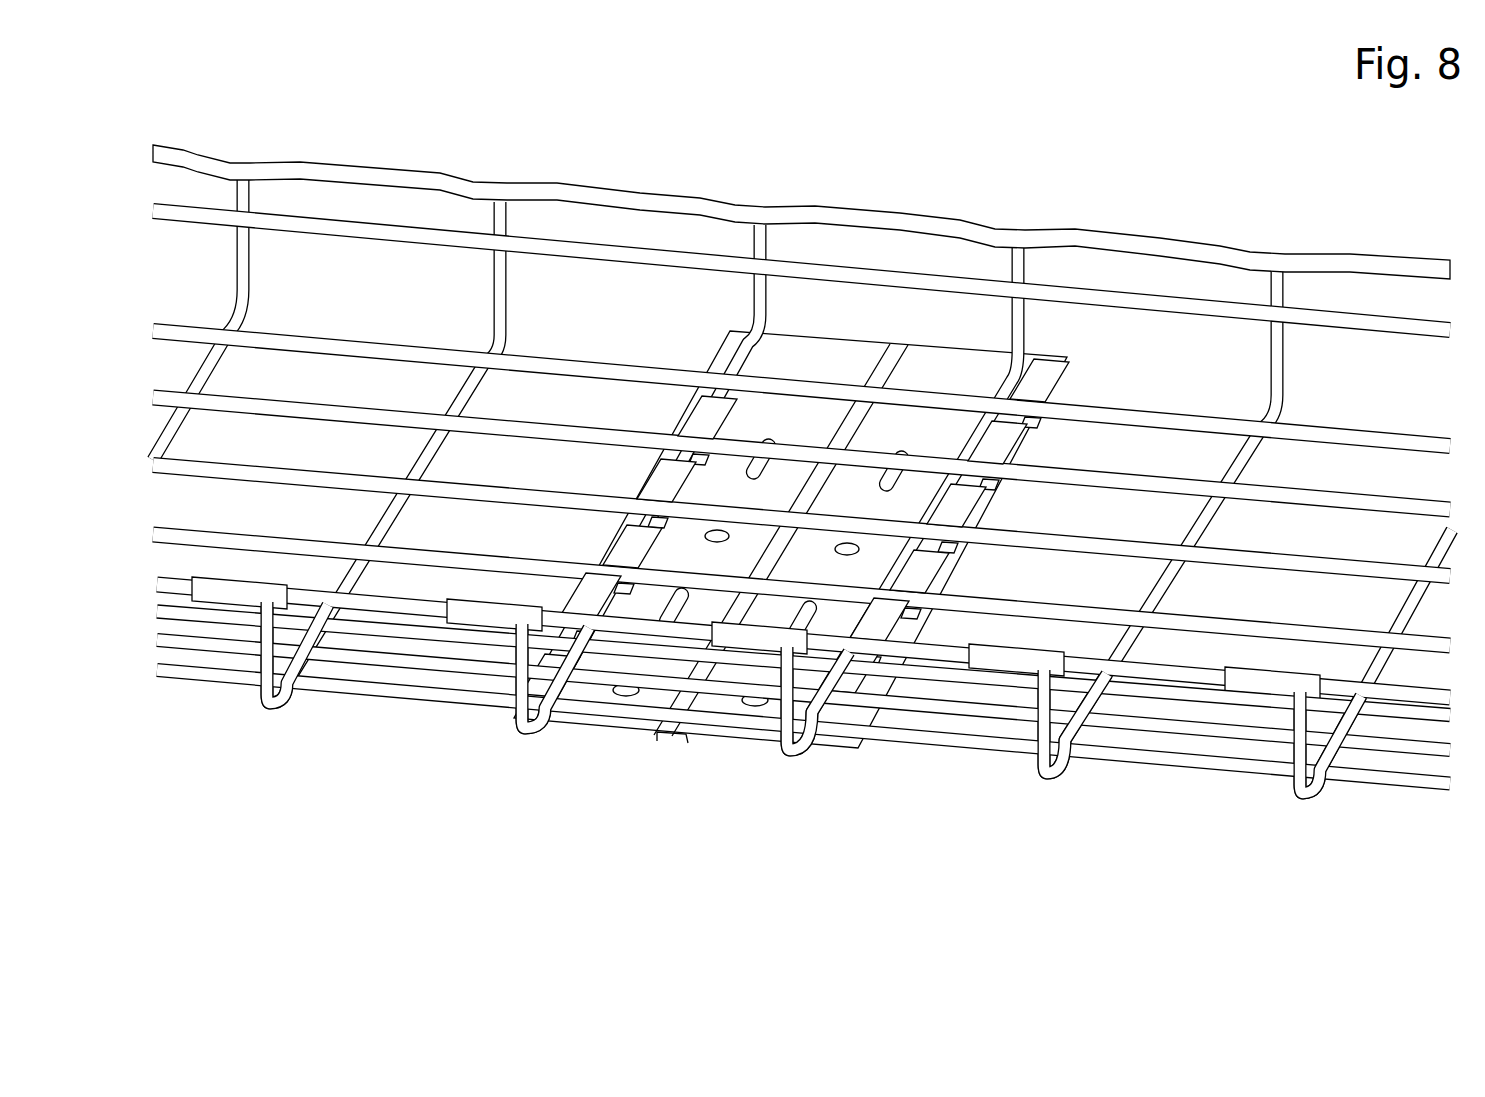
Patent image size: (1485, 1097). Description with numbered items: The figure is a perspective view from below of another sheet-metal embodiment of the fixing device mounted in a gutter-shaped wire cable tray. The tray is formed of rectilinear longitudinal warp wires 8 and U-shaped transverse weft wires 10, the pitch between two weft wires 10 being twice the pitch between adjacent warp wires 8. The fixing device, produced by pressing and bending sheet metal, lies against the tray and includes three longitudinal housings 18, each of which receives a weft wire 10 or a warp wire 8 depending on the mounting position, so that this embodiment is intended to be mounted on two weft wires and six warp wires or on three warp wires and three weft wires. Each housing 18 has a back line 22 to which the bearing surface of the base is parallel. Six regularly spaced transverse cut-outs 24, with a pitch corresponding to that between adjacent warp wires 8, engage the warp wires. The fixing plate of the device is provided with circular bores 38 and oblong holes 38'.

The longitudinal wire 8 is at (1125, 413).
The transverse wire 10 is at (765, 300).
The longitudinal housing 18 is at (898, 347).
The back line 22 is at (690, 748).
The transverse cut-out 24 is at (695, 395).
The bore 38 is at (740, 666).
The oblong hole 38' is at (813, 399).